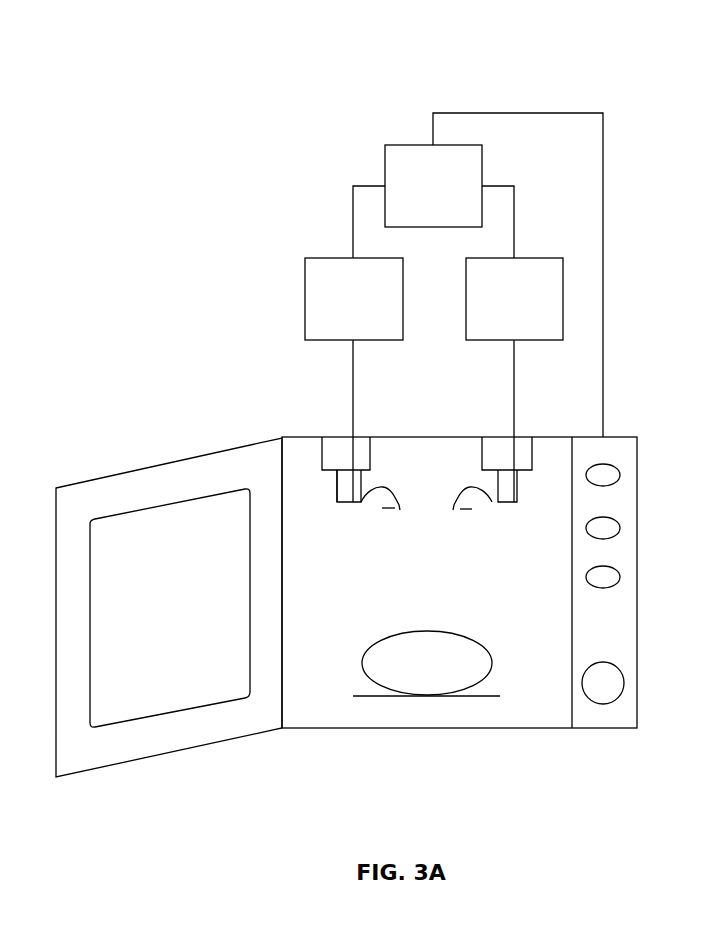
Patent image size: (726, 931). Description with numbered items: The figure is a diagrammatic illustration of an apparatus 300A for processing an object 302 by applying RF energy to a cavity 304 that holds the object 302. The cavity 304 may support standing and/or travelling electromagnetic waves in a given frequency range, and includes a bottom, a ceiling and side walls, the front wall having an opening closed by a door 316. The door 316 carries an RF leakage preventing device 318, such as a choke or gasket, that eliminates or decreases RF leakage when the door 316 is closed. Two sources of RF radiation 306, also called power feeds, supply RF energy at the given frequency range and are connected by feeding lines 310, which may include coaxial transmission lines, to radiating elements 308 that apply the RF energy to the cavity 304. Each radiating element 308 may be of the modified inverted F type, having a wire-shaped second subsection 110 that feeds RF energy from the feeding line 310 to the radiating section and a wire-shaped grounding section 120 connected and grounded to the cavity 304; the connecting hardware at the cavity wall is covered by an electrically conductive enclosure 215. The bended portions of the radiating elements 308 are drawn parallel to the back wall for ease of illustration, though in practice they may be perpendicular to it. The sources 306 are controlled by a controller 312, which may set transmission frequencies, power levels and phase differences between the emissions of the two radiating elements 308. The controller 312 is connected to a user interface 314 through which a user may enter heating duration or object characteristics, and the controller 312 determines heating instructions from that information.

The apparatus 300A is at (304, 100).
The controller 312 is at (384, 156).
The source of RF radiation 306 is at (305, 299).
The feeding line 310 is at (353, 372).
The cavity 304 is at (370, 730).
The user interface 314 is at (637, 612).
The enclosure 215 is at (330, 472).
The second subsection 110 is at (355, 487).
The grounding section 120 is at (337, 488).
The radiating element 308 is at (453, 512).
The object 302 is at (462, 635).
The door 316 is at (93, 770).
The RF leakage preventing device 318 is at (173, 715).